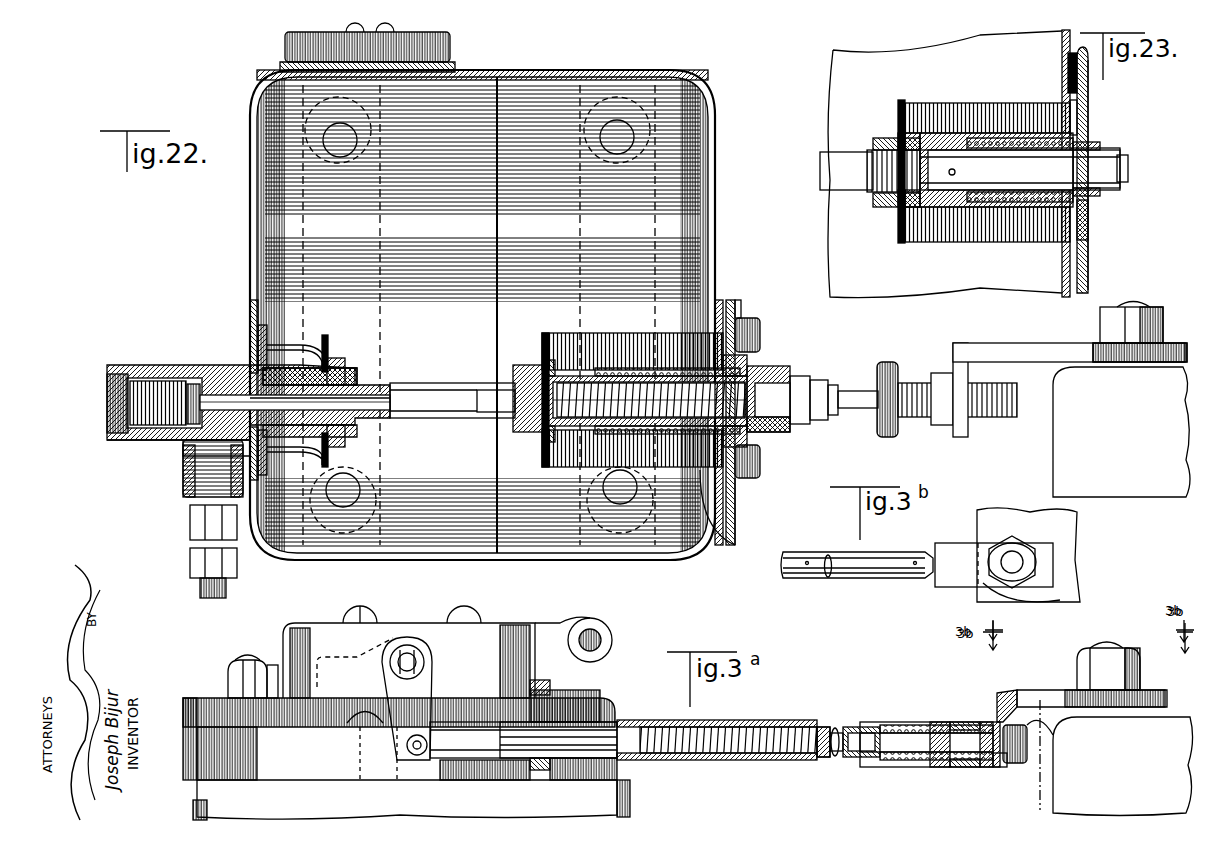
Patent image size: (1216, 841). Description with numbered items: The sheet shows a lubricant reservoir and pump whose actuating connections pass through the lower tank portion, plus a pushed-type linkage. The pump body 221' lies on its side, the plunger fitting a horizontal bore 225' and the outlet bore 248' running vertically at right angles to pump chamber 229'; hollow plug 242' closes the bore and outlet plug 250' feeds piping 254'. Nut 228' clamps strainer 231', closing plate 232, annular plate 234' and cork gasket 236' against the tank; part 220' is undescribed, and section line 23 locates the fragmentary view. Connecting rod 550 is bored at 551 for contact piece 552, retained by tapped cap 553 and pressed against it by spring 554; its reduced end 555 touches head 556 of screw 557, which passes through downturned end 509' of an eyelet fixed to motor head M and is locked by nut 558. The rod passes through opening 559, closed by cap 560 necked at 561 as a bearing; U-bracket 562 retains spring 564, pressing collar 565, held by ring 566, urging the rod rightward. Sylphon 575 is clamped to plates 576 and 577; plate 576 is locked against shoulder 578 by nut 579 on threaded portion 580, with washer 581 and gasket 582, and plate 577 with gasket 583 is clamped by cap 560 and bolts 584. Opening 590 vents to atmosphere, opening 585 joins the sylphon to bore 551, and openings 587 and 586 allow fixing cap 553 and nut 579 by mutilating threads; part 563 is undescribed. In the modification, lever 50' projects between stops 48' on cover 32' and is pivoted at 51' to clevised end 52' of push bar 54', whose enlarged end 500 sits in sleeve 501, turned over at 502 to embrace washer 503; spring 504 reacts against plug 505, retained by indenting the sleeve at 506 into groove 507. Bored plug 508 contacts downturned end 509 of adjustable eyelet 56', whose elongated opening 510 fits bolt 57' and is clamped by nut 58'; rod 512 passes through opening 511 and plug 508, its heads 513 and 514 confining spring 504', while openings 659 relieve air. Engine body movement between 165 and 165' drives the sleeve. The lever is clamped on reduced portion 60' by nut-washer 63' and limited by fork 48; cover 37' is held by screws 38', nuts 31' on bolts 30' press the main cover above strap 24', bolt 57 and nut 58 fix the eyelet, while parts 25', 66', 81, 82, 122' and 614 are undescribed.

In FIG. 22, the pump body 220' is at (248, 392).
In FIG. 22, the plug 221' is at (109, 426).
In FIG. 22, the collar 242' is at (166, 431).
In FIG. 22, the threaded nipple 248' is at (191, 472).
In FIG. 22, the coupling nut 250' is at (185, 522).
In FIG. 22, the coupling nut 254' is at (185, 573).
In FIG. 22, the rod 225' is at (337, 427).
In FIG. 22, the bushing 228' is at (375, 392).
In FIG. 22, the bracket arm 229' is at (315, 355).
In FIG. 22, the pin 231' is at (336, 341).
In FIG. 22, the bracket 232 is at (280, 458).
In FIG. 22, the pin 234' is at (347, 452).
In FIG. 22, the bracket plate 236' is at (273, 342).
In FIG. 22, the tube 23 is at (465, 376).
In FIG. 22, the shaft 550 is at (520, 410).
In FIG. 23, the shaft 550 is at (1120, 153).
In FIG. 22, the sleeve 551 is at (765, 410).
In FIG. 22, the end cap 552 is at (833, 385).
In FIG. 23, the end cap 552 is at (1128, 170).
In FIG. 22, the collar 553 is at (822, 380).
In FIG. 22, the flange 554 is at (545, 433).
In FIG. 22, the rod 555 is at (850, 408).
In FIG. 22, the knurled wheel 556 is at (886, 437).
In FIG. 22, the threaded stem 557 is at (1008, 417).
In FIG. 22, the nut 558 is at (946, 425).
In FIG. 22, the ball bearings 559 is at (698, 330).
In FIG. 22, the plate 560 is at (737, 312).
In FIG. 23, the plate 560 is at (1089, 92).
In FIG. 22, the ring 561 is at (745, 366).
In FIG. 23, the ring 561 is at (1103, 145).
In FIG. 22, the support 562 is at (1180, 363).
In FIG. 23, the housing 563 is at (967, 207).
In FIG. 22, the ball race 564 is at (700, 520).
In FIG. 23, the ball race 564 is at (1013, 207).
In FIG. 22, the washer 565 is at (755, 432).
In FIG. 23, the washer 565 is at (1088, 220).
In FIG. 22, the ring 566 is at (740, 355).
In FIG. 23, the bellows 575 is at (968, 103).
In FIG. 23, the end plate 576 is at (898, 108).
In FIG. 22, the plate 577 is at (729, 300).
In FIG. 23, the plate 577 is at (1077, 87).
In FIG. 23, the ring 578 is at (910, 210).
In FIG. 22, the ring 579 is at (513, 428).
In FIG. 23, the ring 579 is at (898, 208).
In FIG. 23, the nut 580 is at (877, 140).
In FIG. 23, the collar 581 is at (921, 133).
In FIG. 23, the collar 582 is at (910, 102).
In FIG. 22, the wall plate 583 is at (718, 300).
In FIG. 23, the wall plate 583 is at (1062, 70).
In FIG. 22, the nut 584 is at (748, 318).
In FIG. 22, the spindle 585 is at (602, 345).
In FIG. 23, the spindle 585 is at (956, 172).
In FIG. 22, the flange 586 is at (527, 365).
In FIG. 22, the sleeve 587 is at (797, 376).
In FIG. 23, the ring 590 is at (1088, 127).
In FIG. 22, the bracket 509' is at (1051, 390).
In FIG. 22, the machine frame M is at (1060, 462).
In FIG. 3A, the machine frame M is at (1060, 805).
In FIG. 3B, the rod 501 is at (813, 578).
In FIG. 3A, the rod 501 is at (750, 727).
In FIG. 3B, the pin 506 is at (828, 556).
In FIG. 3A, the pin 506 is at (837, 728).
In FIG. 3B, the bracket 56' is at (981, 580).
In FIG. 3A, the bracket 56' is at (1082, 693).
In FIG. 3B, the slot 510 is at (985, 580).
In FIG. 3B, the bolt 57 is at (1053, 562).
In FIG. 3B, the washer 58 is at (1048, 562).
In FIG. 3A, the base 25' is at (382, 800).
In FIG. 3A, the housing wall 30' is at (206, 739).
In FIG. 3A, the cover 37' is at (399, 657).
In FIG. 3A, the cap screw 66' is at (404, 602).
In FIG. 3A, the screw 81 is at (372, 620).
In FIG. 3A, the passage 82 is at (327, 657).
In FIG. 3A, the nut 31' is at (231, 671).
In FIG. 3A, the plate 38' is at (262, 662).
In FIG. 3A, the lever 50' is at (407, 698).
In FIG. 3A, the pivot 60' is at (430, 656).
In FIG. 3A, the pivot screw 63' is at (435, 662).
In FIG. 3A, the rod 48 is at (523, 706).
In FIG. 3A, the rod end 48' is at (357, 746).
In FIG. 3A, the pin 51' is at (415, 772).
In FIG. 3A, the pin 52' is at (382, 776).
In FIG. 3A, the guide 54' is at (485, 782).
In FIG. 3A, the boss 122' is at (595, 634).
In FIG. 3A, the packing 659 is at (600, 712).
In FIG. 3A, the wall 32' is at (590, 699).
In FIG. 3A, the plunger 500 is at (630, 718).
In FIG. 3A, the gland 502 is at (547, 770).
In FIG. 3A, the guide 503 is at (550, 777).
In FIG. 3A, the end plate 24' is at (643, 798).
In FIG. 3A, the tube 504 is at (717, 760).
In FIG. 3A, the coupling 505 is at (793, 760).
In FIG. 3A, the sleeve 507 is at (837, 762).
In FIG. 3A, the collar 513 is at (862, 760).
In FIG. 3A, the tube 504' is at (926, 729).
In FIG. 3A, the ball bearings 512 is at (920, 753).
In FIG. 3A, the bushing 509 is at (978, 726).
In FIG. 3A, the washer 508 is at (987, 728).
In FIG. 3A, the nut 511 is at (990, 763).
In FIG. 3A, the knurled head 514 is at (1027, 745).
In FIG. 3A, the axis 165' is at (1011, 755).
In FIG. 3A, the nut 58' is at (1105, 674).
In FIG. 3A, the bolt 57' is at (1110, 633).
In FIG. 3A, the frame 165 is at (1123, 766).
In FIG. 3A, the opening 614 is at (1040, 760).